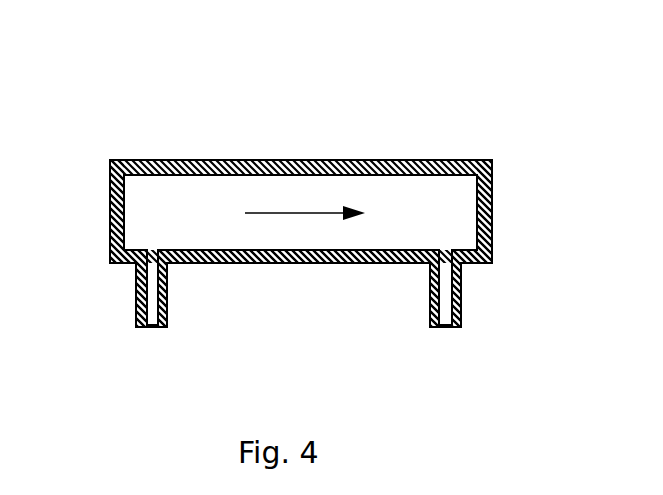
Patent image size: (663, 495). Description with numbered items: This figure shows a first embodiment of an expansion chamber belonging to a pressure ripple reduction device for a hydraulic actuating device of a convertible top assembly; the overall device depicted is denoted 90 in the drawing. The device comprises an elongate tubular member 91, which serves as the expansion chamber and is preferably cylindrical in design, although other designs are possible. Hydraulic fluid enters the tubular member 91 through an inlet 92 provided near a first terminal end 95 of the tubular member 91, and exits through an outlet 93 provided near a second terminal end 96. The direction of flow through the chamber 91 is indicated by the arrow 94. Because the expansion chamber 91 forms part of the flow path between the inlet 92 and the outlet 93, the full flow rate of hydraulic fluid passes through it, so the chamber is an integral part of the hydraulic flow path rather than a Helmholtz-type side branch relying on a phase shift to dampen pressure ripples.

The sensor housing assembly 90 is at (157, 147).
The elongate tubular member 91 is at (258, 263).
The inlet 92 is at (145, 327).
The outlet 93 is at (437, 327).
The arrow 94 is at (315, 213).
The first terminal end 95 is at (108, 213).
The second terminal end 96 is at (492, 254).